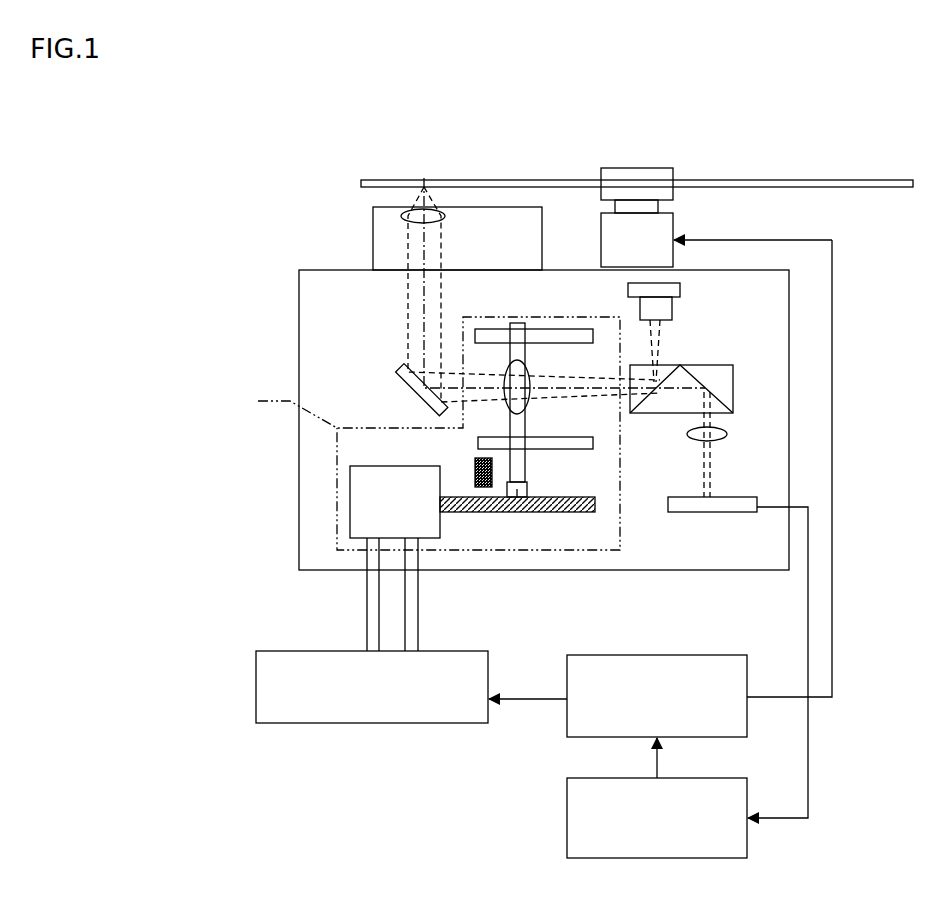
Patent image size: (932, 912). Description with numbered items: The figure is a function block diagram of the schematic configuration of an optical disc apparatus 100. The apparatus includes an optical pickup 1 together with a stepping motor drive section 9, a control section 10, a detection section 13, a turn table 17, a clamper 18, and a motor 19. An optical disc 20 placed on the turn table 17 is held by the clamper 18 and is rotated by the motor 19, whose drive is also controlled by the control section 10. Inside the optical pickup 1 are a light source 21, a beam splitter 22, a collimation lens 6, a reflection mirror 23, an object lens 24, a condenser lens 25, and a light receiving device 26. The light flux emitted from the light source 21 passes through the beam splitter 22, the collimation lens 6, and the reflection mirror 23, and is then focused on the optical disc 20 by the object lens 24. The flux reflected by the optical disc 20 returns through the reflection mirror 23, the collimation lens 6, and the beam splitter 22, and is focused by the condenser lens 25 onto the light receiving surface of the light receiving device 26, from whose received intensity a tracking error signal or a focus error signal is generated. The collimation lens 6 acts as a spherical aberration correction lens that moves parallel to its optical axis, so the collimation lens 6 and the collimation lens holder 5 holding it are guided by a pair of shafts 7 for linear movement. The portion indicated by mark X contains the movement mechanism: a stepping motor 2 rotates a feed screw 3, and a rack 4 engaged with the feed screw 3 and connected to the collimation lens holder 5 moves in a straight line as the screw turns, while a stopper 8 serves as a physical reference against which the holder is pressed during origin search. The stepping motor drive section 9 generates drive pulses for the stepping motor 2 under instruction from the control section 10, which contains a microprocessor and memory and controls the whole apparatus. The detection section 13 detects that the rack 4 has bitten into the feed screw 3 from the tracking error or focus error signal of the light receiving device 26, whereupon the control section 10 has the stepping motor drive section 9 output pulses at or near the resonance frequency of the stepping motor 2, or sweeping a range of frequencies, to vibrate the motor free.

The optical disc apparatus 100 is at (196, 180).
The optical pickup 1 is at (299, 295).
The stepping motor 2 is at (350, 487).
The feed screw 3 is at (573, 512).
The rack 4 is at (520, 512).
The collimation lens holder 5 is at (517, 323).
The collimation lens 6 is at (505, 408).
The pair of shafts 7 is at (555, 329).
The stopper 8 is at (482, 487).
The stepping motor drive section 9 is at (465, 651).
The control section 10 is at (737, 655).
The detection section 13 is at (740, 778).
The turn table 17 is at (678, 193).
The clamper 18 is at (655, 168).
The motor 19 is at (601, 253).
The optical disc 20 is at (857, 180).
The light source 21 is at (680, 283).
The beam splitter 22 is at (733, 388).
The reflection mirror 23 is at (397, 370).
The object lens 24 is at (398, 216).
The condenser lens 25 is at (727, 434).
The light receiving device 26 is at (757, 500).
The portion indicated by mark X is at (435, 433).